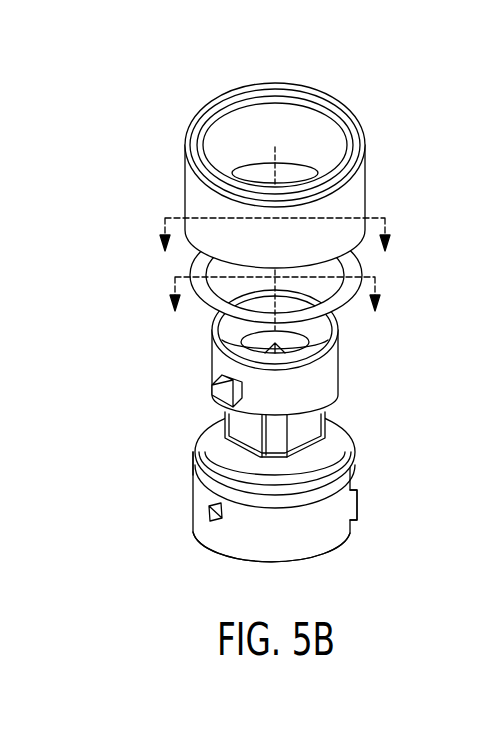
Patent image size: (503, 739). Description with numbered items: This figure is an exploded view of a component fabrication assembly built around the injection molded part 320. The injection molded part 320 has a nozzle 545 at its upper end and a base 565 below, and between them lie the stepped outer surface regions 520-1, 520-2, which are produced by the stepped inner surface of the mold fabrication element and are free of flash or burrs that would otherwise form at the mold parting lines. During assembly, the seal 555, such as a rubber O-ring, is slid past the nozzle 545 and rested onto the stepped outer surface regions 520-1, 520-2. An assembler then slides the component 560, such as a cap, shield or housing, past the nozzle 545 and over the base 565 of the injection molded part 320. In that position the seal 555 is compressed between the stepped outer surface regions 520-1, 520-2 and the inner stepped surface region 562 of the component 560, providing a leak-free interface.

The inner stepped surface region 562 is at (210, 134).
The component 560 is at (341, 159).
The seal 555 is at (327, 303).
The nozzle 545 is at (213, 369).
The stepped outer surface region 520-1 is at (194, 469).
The stepped outer surface region 520-2 is at (355, 458).
The base 565 is at (274, 498).
The injection molded part 320 is at (318, 537).